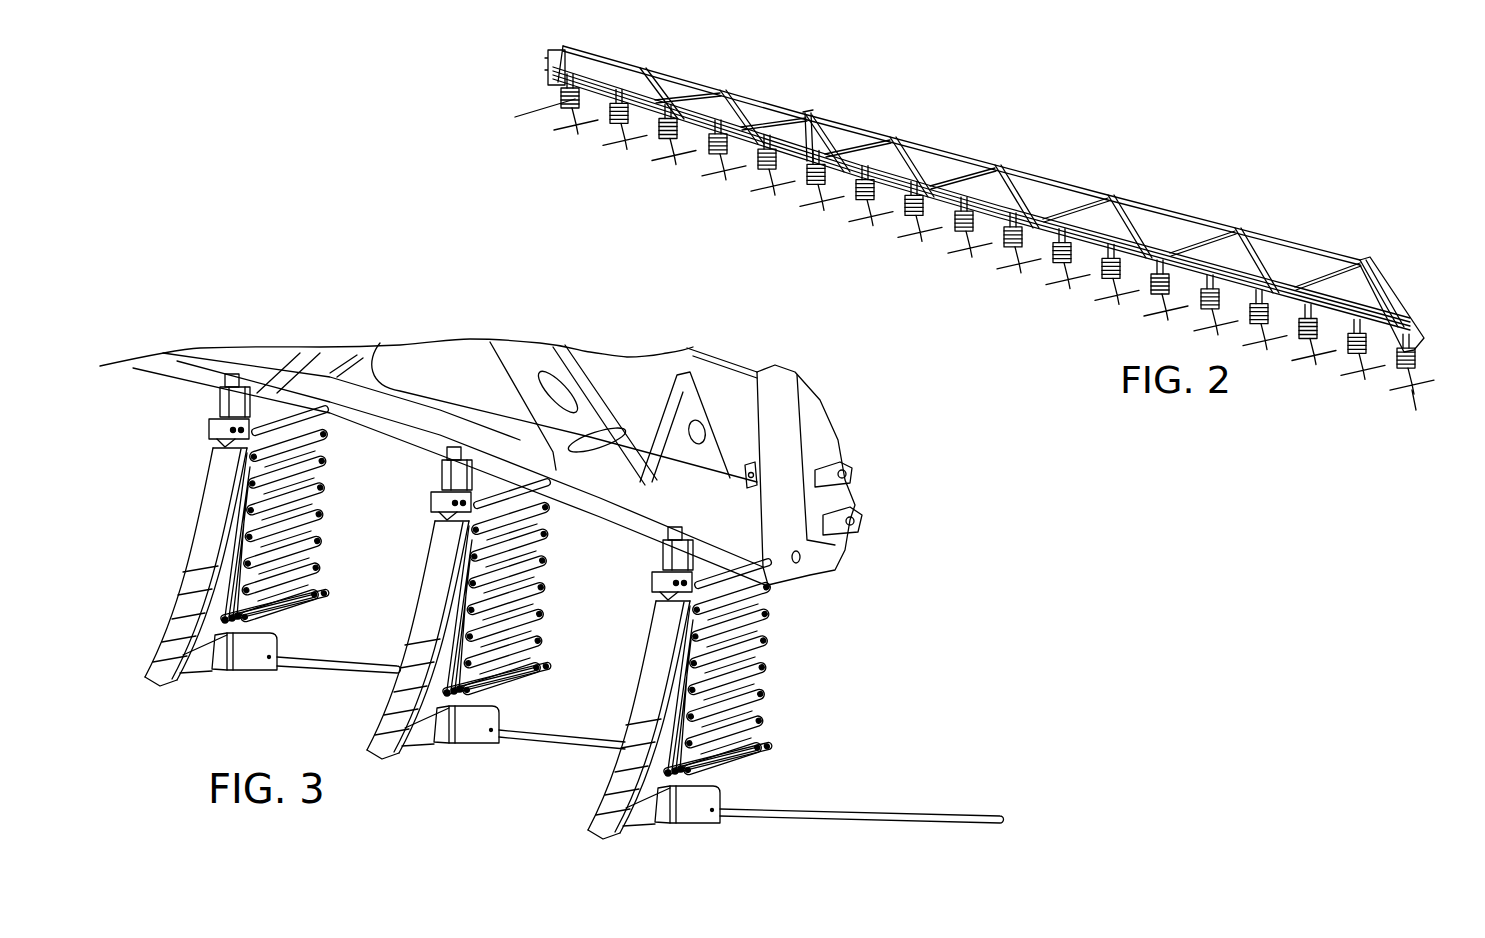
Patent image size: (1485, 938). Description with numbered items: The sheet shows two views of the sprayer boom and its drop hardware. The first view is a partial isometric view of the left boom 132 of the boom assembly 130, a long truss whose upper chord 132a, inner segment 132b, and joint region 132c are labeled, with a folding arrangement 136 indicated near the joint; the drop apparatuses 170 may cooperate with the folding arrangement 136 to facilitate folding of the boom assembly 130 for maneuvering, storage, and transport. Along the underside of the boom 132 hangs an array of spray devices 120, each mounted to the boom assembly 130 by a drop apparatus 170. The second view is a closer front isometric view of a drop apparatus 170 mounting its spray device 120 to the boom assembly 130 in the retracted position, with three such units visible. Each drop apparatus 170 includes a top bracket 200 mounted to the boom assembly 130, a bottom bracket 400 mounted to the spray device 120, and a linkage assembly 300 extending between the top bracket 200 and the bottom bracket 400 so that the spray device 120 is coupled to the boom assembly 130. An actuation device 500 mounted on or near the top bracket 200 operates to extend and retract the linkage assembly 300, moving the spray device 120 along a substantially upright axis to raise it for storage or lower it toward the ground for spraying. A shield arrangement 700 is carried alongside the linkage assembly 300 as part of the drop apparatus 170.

In FIG. 2, the spray device 120 is at (573, 108).
In FIG. 3, the spray device 120 is at (683, 832).
In FIG. 2, the boom assembly 130 is at (979, 236).
In FIG. 2, the boom 132 is at (984, 195).
In FIG. 2, the upper chord 132a is at (1160, 207).
In FIG. 2, the inner truss segment 132b is at (728, 90).
In FIG. 2, the truss joint 132c is at (808, 113).
In FIG. 2, the folding arrangement 136 is at (816, 103).
In FIG. 2, the drop apparatus 170 is at (562, 98).
In FIG. 3, the drop apparatus 170 is at (784, 692).
In FIG. 3, the top bracket 200 is at (660, 563).
In FIG. 3, the linkage assembly 300 is at (757, 639).
In FIG. 3, the bottom bracket 400 is at (728, 762).
In FIG. 3, the actuation device 500 is at (650, 585).
In FIG. 3, the shield arrangement 700 is at (648, 694).